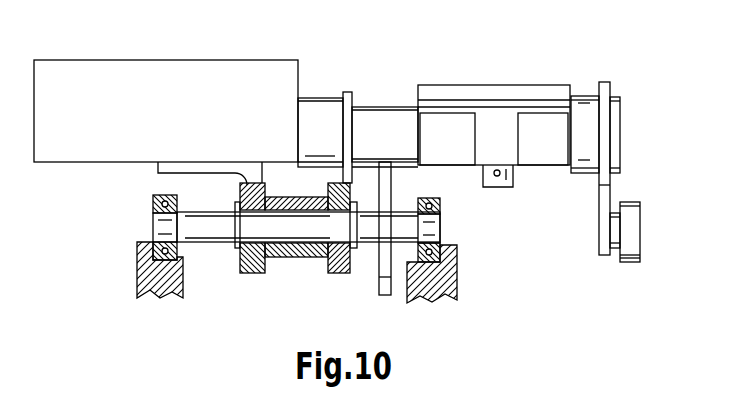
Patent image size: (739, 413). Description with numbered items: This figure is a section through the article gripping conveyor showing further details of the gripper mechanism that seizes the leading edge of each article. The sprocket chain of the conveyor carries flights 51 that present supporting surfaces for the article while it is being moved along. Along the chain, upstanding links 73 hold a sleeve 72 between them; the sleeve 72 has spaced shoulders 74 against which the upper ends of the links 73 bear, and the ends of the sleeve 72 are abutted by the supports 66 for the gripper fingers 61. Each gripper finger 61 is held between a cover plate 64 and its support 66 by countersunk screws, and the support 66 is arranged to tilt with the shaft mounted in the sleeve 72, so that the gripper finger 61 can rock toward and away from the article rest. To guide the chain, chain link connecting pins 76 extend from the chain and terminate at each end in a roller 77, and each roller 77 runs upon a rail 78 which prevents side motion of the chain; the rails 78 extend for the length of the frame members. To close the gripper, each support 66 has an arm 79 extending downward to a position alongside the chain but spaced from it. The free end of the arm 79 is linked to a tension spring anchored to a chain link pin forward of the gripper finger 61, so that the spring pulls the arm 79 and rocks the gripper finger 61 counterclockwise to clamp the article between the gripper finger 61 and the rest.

The flight 51 is at (246, 72).
The sleeve 72 is at (320, 97).
The spaced shoulders 74 is at (348, 93).
The gripper finger 61 is at (438, 102).
The cover plate 64 is at (493, 95).
The support 66 is at (510, 120).
The upstanding links 73 is at (352, 196).
The chain link connecting pins 76 is at (208, 242).
The roller 77 is at (153, 202).
The rail 78 is at (137, 273).
The arm 79 is at (388, 295).